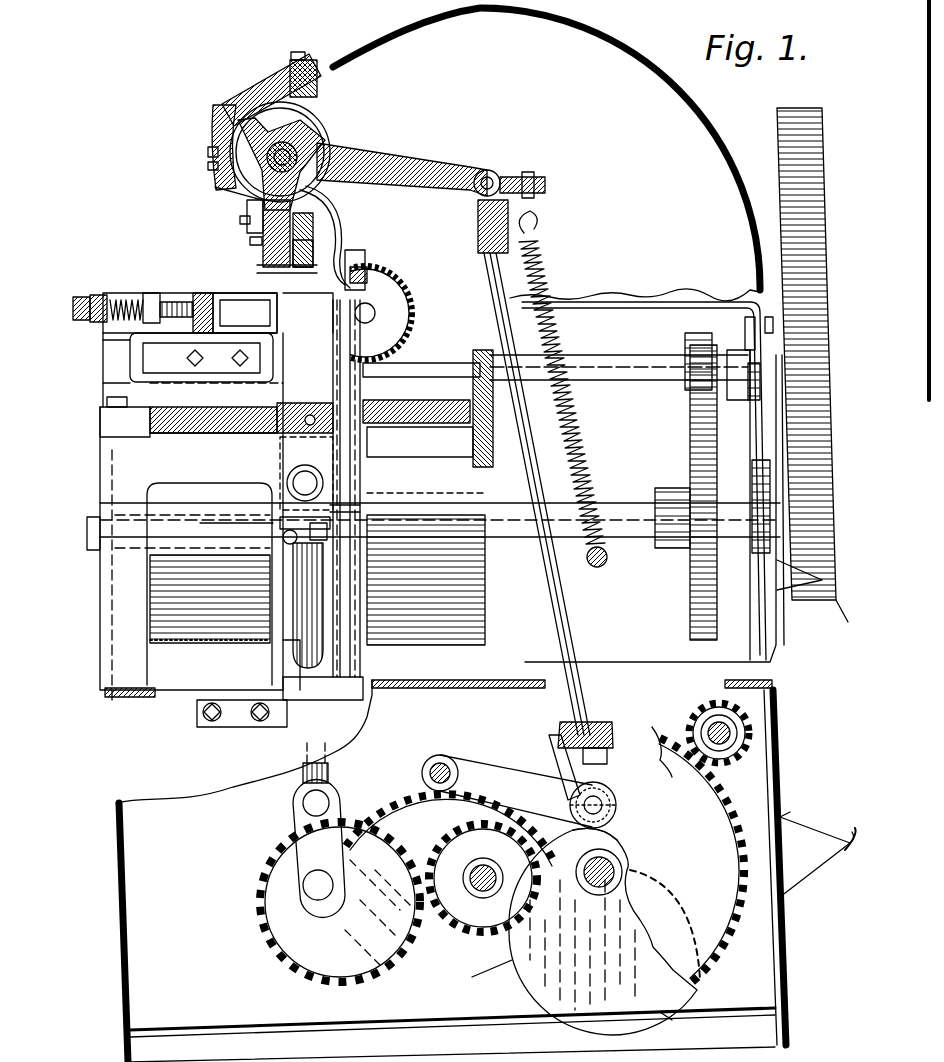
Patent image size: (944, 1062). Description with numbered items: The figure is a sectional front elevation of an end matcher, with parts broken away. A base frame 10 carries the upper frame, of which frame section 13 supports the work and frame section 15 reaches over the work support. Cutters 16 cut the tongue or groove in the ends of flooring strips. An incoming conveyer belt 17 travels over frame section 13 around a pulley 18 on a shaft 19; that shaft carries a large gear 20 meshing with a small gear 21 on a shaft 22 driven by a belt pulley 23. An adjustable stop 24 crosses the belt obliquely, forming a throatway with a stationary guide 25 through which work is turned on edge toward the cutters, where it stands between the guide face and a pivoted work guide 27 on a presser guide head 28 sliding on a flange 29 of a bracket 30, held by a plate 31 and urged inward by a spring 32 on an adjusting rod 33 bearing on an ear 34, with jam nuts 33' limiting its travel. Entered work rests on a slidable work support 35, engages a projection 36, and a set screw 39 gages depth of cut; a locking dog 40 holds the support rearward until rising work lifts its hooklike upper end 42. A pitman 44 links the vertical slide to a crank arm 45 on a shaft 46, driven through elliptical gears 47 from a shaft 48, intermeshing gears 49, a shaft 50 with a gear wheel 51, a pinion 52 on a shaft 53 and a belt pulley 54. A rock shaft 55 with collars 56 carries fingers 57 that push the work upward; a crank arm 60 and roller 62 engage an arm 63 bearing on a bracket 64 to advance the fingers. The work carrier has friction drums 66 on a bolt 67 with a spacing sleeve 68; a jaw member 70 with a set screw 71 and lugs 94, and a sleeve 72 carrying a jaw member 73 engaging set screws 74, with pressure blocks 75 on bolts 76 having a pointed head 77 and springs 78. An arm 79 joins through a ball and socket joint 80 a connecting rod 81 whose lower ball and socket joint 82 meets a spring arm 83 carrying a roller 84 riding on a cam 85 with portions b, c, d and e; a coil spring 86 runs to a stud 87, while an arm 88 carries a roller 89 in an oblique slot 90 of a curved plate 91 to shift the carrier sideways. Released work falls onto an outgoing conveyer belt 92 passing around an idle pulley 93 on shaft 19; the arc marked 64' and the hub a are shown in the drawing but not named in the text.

The base frame 10 is at (130, 760).
The frame section 13 is at (117, 657).
The frame section 15 is at (759, 653).
The cutters 16 is at (240, 283).
The incoming conveyer belt 17 is at (183, 425).
The pulley 18 is at (173, 603).
The shaft 19 is at (188, 545).
The large gear 20 is at (717, 627).
The small gear 21 is at (689, 336).
The shaft 22 is at (729, 370).
The belt pulley 23 is at (785, 107).
The adjustable stop 24 is at (140, 393).
The stationary guide 25 is at (363, 353).
The pivoted work guide 27 is at (297, 308).
The presser guide head 28 is at (198, 300).
The projecting flange 29 is at (130, 352).
The bracket 30 is at (107, 337).
The plate 31 is at (210, 370).
The spring 32 is at (125, 302).
The adjusting rod 33 is at (136, 275).
The jam nuts 33' is at (96, 282).
The ear 34 is at (110, 293).
The work support 35 is at (387, 427).
The projection 36 is at (360, 393).
The set screw 39 is at (303, 417).
The locking dog 40 is at (213, 420).
The hooklike upper end 42 is at (215, 378).
The pitman 44 is at (327, 767).
The crank arm 45 is at (297, 820).
The shaft 46 is at (313, 887).
The elliptical gears 47 is at (393, 833).
The shaft 48 is at (477, 895).
The intermeshing gears 49 is at (575, 815).
The shaft 50 is at (628, 870).
The gear wheel 51 is at (725, 930).
The pinion 52 is at (690, 718).
The shaft 53 is at (730, 727).
The belt pulley 54 is at (849, 847).
The rock shaft 55 is at (303, 483).
The collars 56 is at (360, 510).
The fingers 57 is at (300, 292).
The crank arm 60 is at (200, 524).
The roller 62 is at (283, 537).
The arm 63 is at (283, 523).
The bracket 64 is at (254, 665).
The arc track 64' is at (546, 149).
The friction drums 66 is at (310, 127).
The bolt 67 is at (330, 147).
The spacing sleeve 68 is at (300, 143).
The jaw member 70 is at (340, 245).
The set screw 71 is at (340, 277).
The sleeve 72 is at (250, 196).
The jaw member 73 is at (255, 212).
The set screws 74 is at (242, 221).
The pressure blocks 75 is at (317, 222).
The bolts 76 is at (263, 260).
The rounded pointed head 77 is at (345, 258).
The springs 78 is at (300, 252).
The arm 79 is at (413, 167).
The ball and socket joint 80 is at (499, 173).
The connecting rod 81 is at (393, 293).
The ball and socket joint 82 is at (560, 722).
The spring arm 83 is at (478, 760).
The roller 84 is at (605, 790).
The cam 85 is at (555, 990).
The coil spring 86 is at (545, 233).
The stud 87 is at (608, 557).
The arm 88 is at (287, 123).
The roller 89 is at (247, 97).
The oblique slot 90 is at (218, 133).
The curved plate 91 is at (267, 93).
The outgoing conveyer belt 92 is at (440, 398).
The idle pulley 93 is at (430, 620).
The lugs 94 is at (360, 223).
The hub a is at (620, 860).
The cam part b is at (612, 840).
The cam part c is at (476, 980).
The cam part d is at (668, 1003).
The cam decline e is at (682, 900).